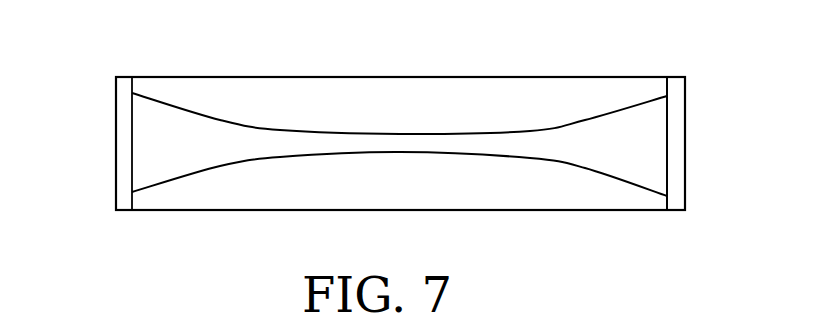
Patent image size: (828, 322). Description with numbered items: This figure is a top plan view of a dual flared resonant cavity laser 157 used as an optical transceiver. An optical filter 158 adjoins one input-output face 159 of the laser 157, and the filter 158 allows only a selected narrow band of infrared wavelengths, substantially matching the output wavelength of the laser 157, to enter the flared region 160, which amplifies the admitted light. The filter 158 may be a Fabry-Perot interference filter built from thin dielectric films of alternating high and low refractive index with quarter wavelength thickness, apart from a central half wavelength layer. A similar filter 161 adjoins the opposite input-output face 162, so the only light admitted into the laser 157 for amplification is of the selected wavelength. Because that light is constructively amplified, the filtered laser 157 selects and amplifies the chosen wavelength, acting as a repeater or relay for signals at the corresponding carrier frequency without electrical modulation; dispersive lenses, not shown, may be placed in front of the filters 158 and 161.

The laser 157 is at (565, 77).
The optical filter 158 is at (127, 77).
The input-output face 159 is at (131, 166).
The flared region 160 is at (182, 178).
The filter 161 is at (680, 77).
The input-output face 162 is at (686, 168).